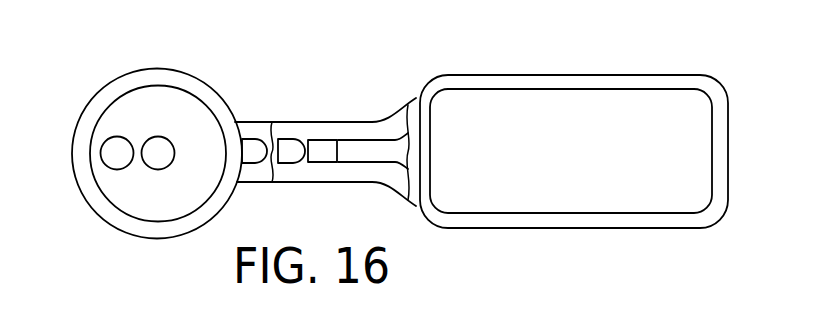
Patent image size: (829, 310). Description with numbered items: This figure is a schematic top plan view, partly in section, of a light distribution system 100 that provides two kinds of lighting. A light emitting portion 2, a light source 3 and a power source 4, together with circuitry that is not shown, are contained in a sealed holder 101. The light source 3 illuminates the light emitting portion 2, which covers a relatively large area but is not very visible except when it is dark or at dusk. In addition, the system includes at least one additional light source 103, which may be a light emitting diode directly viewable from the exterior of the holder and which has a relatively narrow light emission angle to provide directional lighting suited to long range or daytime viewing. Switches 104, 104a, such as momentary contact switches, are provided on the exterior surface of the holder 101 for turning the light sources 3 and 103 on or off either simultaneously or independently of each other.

The light emitting portion 2 is at (567, 97).
The light source 3 is at (293, 135).
The power source 4 is at (143, 74).
The light distribution system 100 is at (404, 93).
The sealed holder 101 is at (490, 70).
The additional light source 103 is at (250, 136).
The switch 104 is at (157, 162).
The switch 104a is at (105, 152).